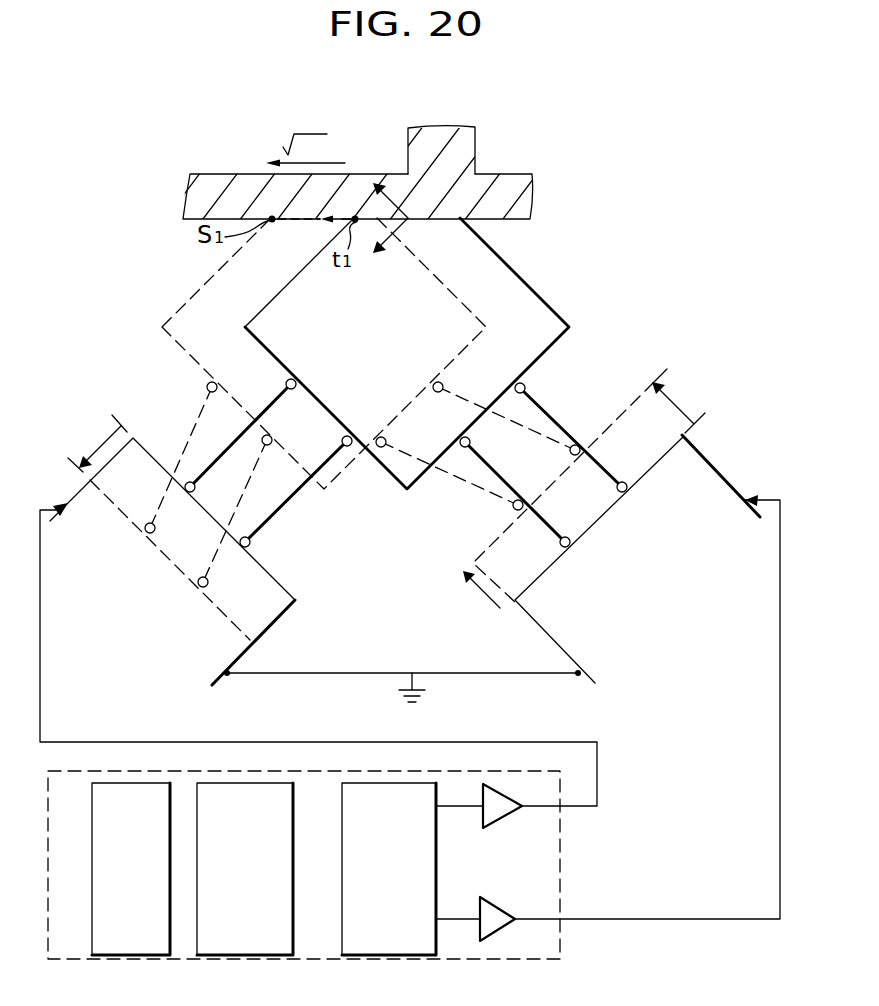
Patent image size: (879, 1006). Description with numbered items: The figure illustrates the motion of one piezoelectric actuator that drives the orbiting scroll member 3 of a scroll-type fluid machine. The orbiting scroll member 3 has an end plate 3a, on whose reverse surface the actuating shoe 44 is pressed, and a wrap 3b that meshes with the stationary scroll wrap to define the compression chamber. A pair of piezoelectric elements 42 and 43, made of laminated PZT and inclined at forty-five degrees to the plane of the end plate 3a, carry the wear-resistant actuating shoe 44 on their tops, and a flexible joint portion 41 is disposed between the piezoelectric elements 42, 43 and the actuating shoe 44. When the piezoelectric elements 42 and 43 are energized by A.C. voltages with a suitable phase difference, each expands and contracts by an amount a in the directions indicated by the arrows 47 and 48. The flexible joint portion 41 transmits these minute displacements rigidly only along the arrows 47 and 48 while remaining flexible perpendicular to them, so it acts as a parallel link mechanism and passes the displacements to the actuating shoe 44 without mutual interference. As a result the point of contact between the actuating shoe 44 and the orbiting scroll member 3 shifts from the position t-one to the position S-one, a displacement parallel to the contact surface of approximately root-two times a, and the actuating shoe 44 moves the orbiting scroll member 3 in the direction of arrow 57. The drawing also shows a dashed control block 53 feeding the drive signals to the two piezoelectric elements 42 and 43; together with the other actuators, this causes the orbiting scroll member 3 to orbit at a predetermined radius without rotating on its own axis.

The orbiting scroll member 3 is at (397, 174).
The end plate 3a is at (522, 207).
The wrap 3b is at (466, 153).
The flexible joint portion 41 is at (547, 412).
The piezoelectric element 42 is at (724, 479).
The piezoelectric element 43 is at (79, 516).
The actuating shoe 44 is at (544, 302).
The arrow 47 is at (485, 598).
The arrow 48 is at (300, 612).
The control circuit 53 is at (443, 958).
The arrow 57 is at (337, 163).